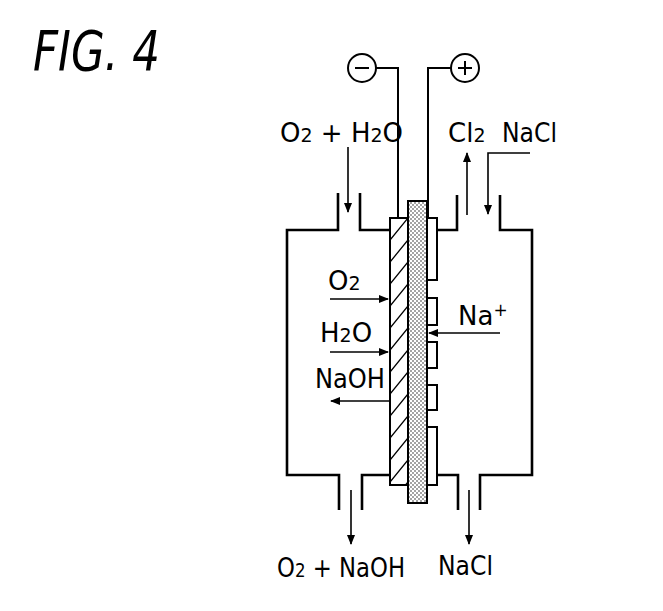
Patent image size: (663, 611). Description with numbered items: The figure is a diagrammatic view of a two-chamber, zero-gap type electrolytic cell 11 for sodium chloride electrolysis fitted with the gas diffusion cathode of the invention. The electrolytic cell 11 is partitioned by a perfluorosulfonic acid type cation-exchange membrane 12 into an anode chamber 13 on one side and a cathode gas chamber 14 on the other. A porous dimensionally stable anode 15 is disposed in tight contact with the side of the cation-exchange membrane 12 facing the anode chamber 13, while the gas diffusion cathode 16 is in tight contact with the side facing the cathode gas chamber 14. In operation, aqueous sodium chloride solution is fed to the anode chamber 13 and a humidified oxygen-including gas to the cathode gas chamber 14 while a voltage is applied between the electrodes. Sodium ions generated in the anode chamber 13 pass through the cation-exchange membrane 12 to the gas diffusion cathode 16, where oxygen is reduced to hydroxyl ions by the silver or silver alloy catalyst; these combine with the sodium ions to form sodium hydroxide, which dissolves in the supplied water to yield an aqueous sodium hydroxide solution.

The two-chamber type electrolytic cell 11 is at (406, 327).
The cation-exchange membrane 12 is at (423, 257).
The anode chamber 13 is at (517, 433).
The cathode gas chamber 14 is at (322, 450).
The porous dimensionally stable anode 15 is at (437, 352).
The gas diffusion cathode 16 is at (390, 251).